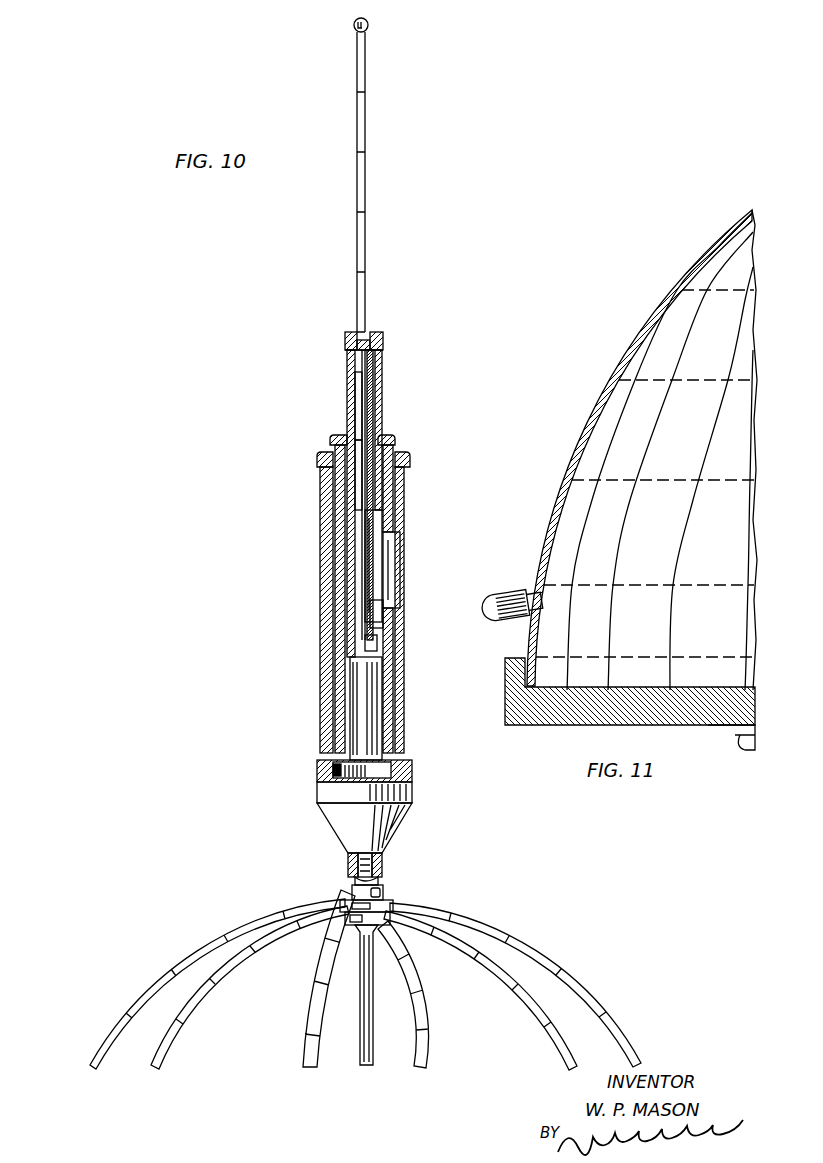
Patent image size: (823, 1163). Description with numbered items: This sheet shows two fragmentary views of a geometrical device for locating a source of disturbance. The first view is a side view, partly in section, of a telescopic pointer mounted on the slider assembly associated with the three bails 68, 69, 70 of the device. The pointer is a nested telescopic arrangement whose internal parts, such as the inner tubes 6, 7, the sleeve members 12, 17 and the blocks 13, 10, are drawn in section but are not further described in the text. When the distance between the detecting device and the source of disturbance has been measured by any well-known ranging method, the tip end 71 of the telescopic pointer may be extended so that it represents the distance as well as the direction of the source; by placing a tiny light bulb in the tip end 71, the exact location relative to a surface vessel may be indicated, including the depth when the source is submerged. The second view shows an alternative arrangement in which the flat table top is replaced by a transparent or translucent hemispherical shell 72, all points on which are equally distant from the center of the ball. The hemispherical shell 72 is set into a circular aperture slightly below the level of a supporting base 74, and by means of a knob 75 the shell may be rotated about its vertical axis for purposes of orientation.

In FIG. 10, the tip end 71 is at (368, 25).
In FIG. 10, the bail 68 is at (146, 1010).
In FIG. 10, the bail 69 is at (213, 998).
In FIG. 10, the bail 70 is at (314, 998).
In FIG. 10, the inner tube 6 is at (362, 406).
In FIG. 10, the inner tube section 7 is at (362, 475).
In FIG. 10, the sleeve member 12 is at (375, 566).
In FIG. 10, the side member 17 is at (392, 570).
In FIG. 10, the coupling block 13 is at (377, 614).
In FIG. 10, the stop block 10 is at (372, 643).
In FIG. 11, the hemispherical shell 72 is at (645, 321).
In FIG. 11, the supporting base 74 is at (532, 724).
In FIG. 11, the knob 75 is at (506, 592).